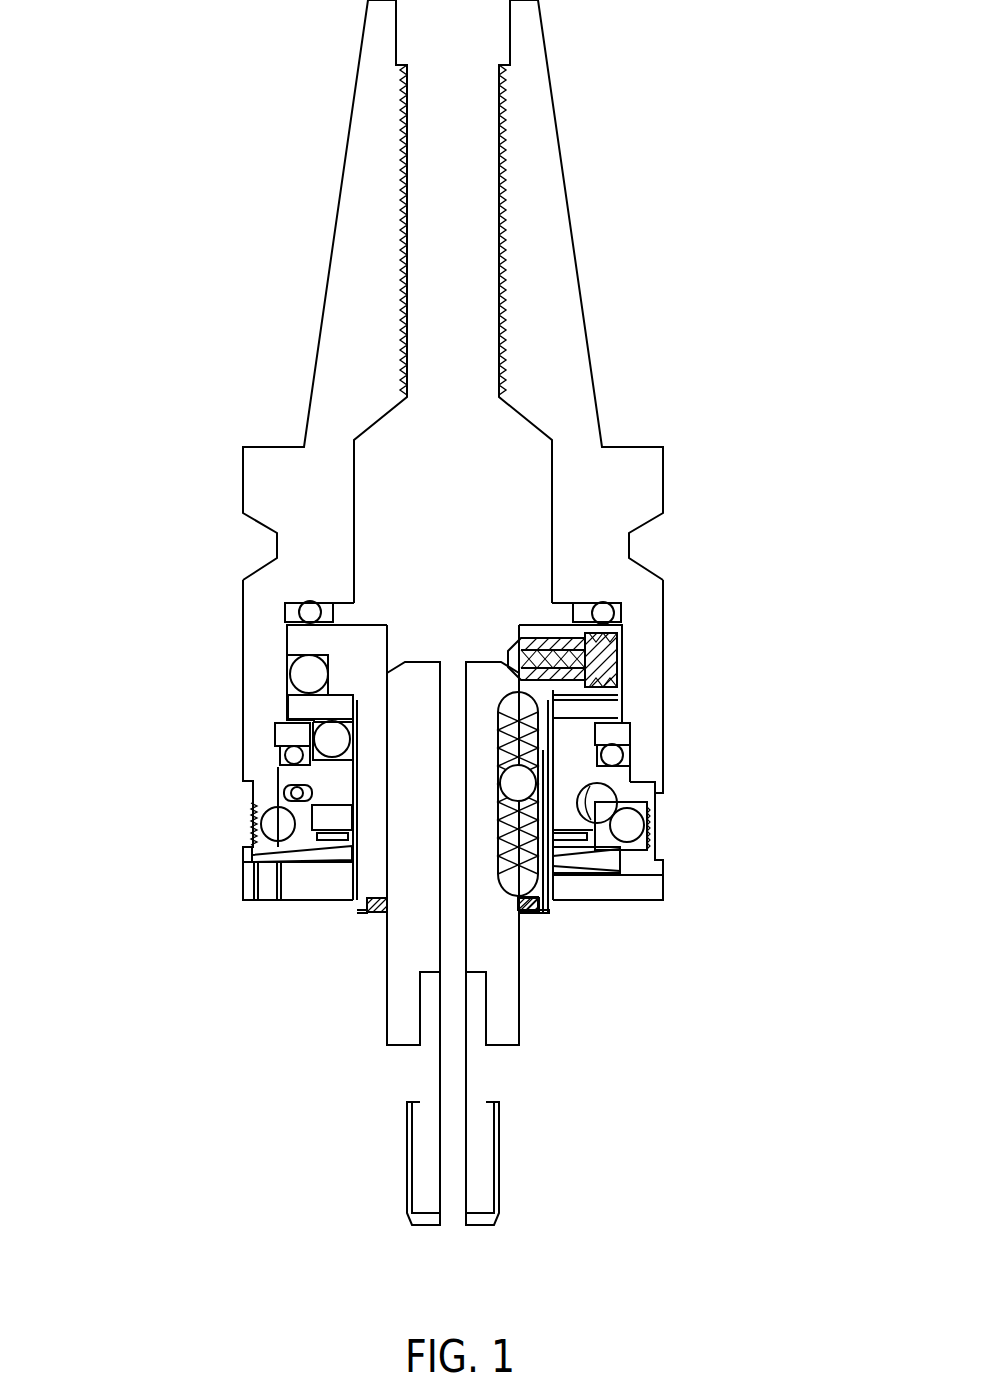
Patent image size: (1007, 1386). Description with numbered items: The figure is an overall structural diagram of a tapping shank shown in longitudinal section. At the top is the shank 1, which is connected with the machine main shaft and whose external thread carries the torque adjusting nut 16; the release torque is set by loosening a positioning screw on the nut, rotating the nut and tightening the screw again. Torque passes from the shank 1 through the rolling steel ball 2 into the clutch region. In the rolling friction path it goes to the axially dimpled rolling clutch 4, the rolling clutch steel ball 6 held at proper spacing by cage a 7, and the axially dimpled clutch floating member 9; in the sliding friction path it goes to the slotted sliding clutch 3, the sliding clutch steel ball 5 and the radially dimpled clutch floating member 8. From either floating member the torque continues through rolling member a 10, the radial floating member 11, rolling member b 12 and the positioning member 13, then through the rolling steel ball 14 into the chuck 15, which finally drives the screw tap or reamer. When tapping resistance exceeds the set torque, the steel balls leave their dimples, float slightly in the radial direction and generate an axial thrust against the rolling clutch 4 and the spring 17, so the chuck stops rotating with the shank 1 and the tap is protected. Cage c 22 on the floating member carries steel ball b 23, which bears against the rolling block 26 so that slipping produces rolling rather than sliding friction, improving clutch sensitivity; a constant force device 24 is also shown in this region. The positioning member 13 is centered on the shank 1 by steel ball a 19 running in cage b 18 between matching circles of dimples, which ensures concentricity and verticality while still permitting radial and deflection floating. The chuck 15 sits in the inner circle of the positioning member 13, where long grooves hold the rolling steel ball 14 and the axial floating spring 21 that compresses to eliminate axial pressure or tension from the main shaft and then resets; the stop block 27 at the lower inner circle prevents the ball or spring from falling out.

The shank 1 is at (632, 492).
The rolling steel ball 2 is at (637, 825).
The slotted sliding clutch 3 is at (613, 842).
The axially dimpled rolling clutch 4 is at (300, 837).
The sliding clutch steel ball 5 is at (602, 807).
The rolling clutch steel ball 6 is at (285, 792).
The cage a 7 is at (276, 797).
The radially dimpled clutch floating member 8 is at (578, 733).
The axially dimpled clutch floating member 9 is at (280, 775).
The rolling member a 10 is at (332, 737).
The radial floating member 11 is at (300, 707).
The rolling member b 12 is at (307, 675).
The positioning member 13 is at (308, 642).
The rolling steel ball 14 is at (527, 782).
The chuck 15 is at (502, 967).
The torque adjusting nut 16 is at (607, 893).
The spring 17 is at (615, 868).
The cage b 18 is at (292, 612).
The steel ball a 19 is at (310, 607).
The axial floating spring 21 is at (585, 670).
The cage c 22 is at (612, 753).
The steel ball b 23 is at (628, 742).
The constant force device 24 is at (603, 650).
The rolling block 26 is at (615, 733).
The stop block 27 is at (357, 910).